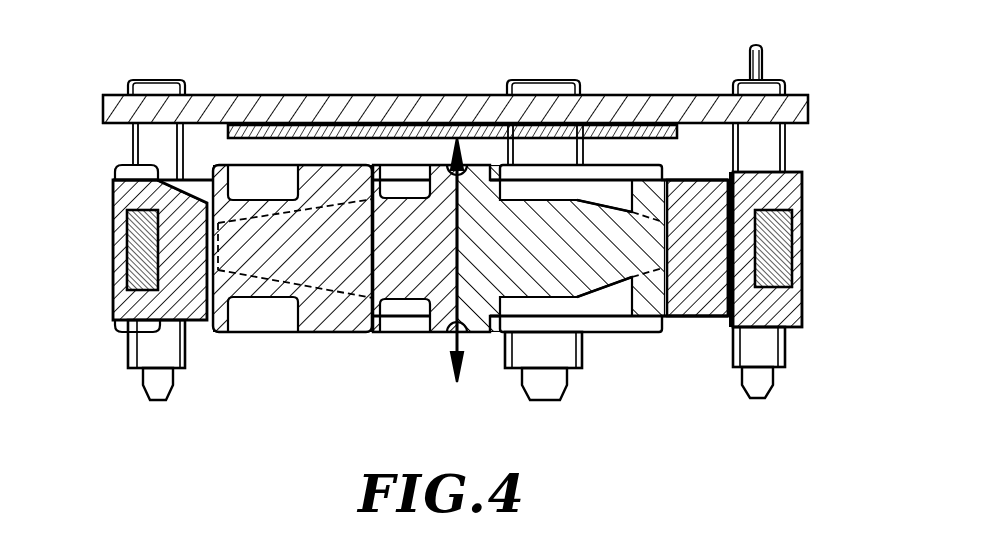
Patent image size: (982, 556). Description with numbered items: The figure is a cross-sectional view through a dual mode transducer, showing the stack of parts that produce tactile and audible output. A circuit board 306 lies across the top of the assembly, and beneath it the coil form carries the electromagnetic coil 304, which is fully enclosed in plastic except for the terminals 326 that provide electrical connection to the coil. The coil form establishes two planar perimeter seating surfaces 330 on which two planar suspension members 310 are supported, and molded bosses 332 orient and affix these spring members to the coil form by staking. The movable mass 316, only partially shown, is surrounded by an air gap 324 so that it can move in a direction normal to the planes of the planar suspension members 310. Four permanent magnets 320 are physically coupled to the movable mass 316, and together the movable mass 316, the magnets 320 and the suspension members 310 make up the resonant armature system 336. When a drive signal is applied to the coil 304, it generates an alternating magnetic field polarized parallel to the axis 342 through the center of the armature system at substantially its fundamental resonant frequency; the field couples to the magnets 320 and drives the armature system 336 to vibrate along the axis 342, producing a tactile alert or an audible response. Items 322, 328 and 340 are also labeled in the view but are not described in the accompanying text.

The electromagnetic coil 304 is at (127, 212).
The circuit board 306 is at (798, 95).
The planar suspension members 310 is at (207, 190).
The movable mass 316 is at (340, 295).
The permanent magnets 320 is at (690, 182).
The side bolt 322 is at (790, 143).
The air gap 324 is at (725, 155).
The terminals 326 is at (762, 48).
The bolt shank 328 is at (132, 130).
The planar perimeter seating surfaces 330 is at (113, 183).
The bosses 332 is at (116, 167).
The resonant armature system 336 is at (593, 320).
The shim plate 340 is at (460, 128).
The axis 342 is at (474, 280).